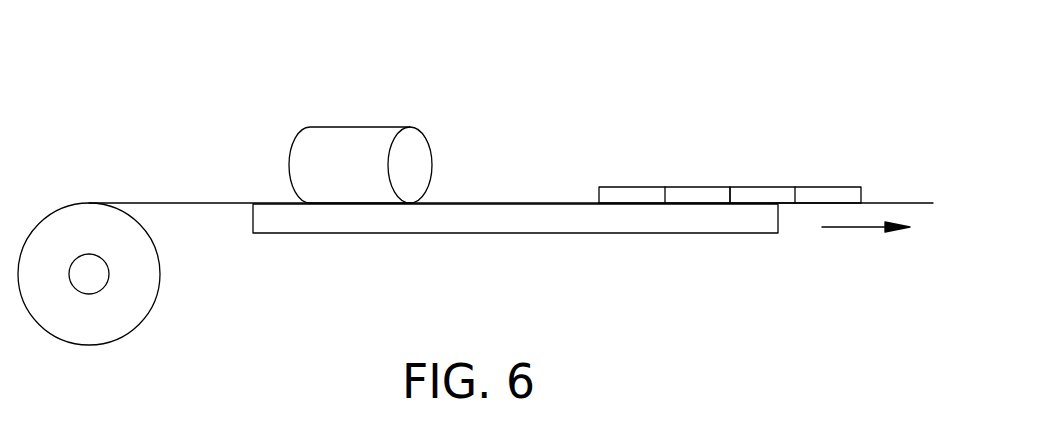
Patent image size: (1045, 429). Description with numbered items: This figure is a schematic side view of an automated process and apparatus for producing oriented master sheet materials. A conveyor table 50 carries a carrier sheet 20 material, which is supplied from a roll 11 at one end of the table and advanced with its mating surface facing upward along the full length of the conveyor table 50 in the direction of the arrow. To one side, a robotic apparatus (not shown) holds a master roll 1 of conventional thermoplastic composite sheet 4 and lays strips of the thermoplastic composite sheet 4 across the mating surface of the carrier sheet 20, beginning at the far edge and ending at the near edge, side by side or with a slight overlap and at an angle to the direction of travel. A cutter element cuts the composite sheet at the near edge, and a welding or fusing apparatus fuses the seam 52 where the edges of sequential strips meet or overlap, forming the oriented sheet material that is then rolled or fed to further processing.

The carrier sheet 20 is at (180, 203).
The supply roll 11 is at (142, 283).
The conveyor table 50 is at (677, 223).
The master roll 1 is at (337, 127).
The thermoplastic composite sheet 4 is at (712, 187).
The seam 52 is at (730, 187).